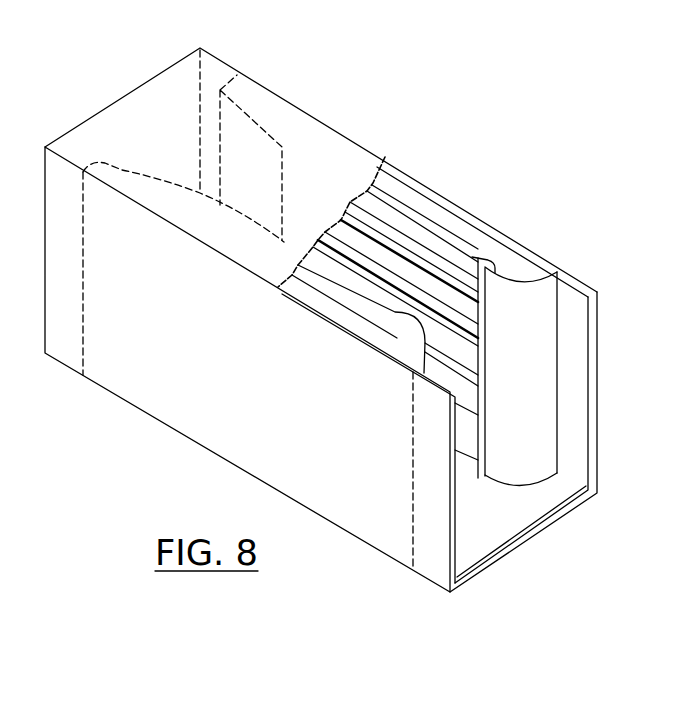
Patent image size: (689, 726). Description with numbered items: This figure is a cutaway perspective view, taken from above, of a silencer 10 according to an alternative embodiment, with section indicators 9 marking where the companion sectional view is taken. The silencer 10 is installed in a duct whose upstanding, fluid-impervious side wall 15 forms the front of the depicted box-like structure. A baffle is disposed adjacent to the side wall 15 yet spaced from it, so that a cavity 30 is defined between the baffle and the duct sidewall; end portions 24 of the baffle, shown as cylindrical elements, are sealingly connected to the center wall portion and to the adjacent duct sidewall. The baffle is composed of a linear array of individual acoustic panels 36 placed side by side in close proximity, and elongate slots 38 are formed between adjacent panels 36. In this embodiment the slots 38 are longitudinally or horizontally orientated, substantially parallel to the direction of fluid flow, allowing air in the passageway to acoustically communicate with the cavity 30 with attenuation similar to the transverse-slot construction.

The silencer 10 is at (352, 118).
The side wall 15 is at (245, 386).
The end portion 24 is at (122, 172).
The cavity 30 is at (447, 212).
The acoustic panel 36 is at (454, 281).
The elongate slot 38 is at (466, 366).
The section line 9- 9 is at (426, 158).